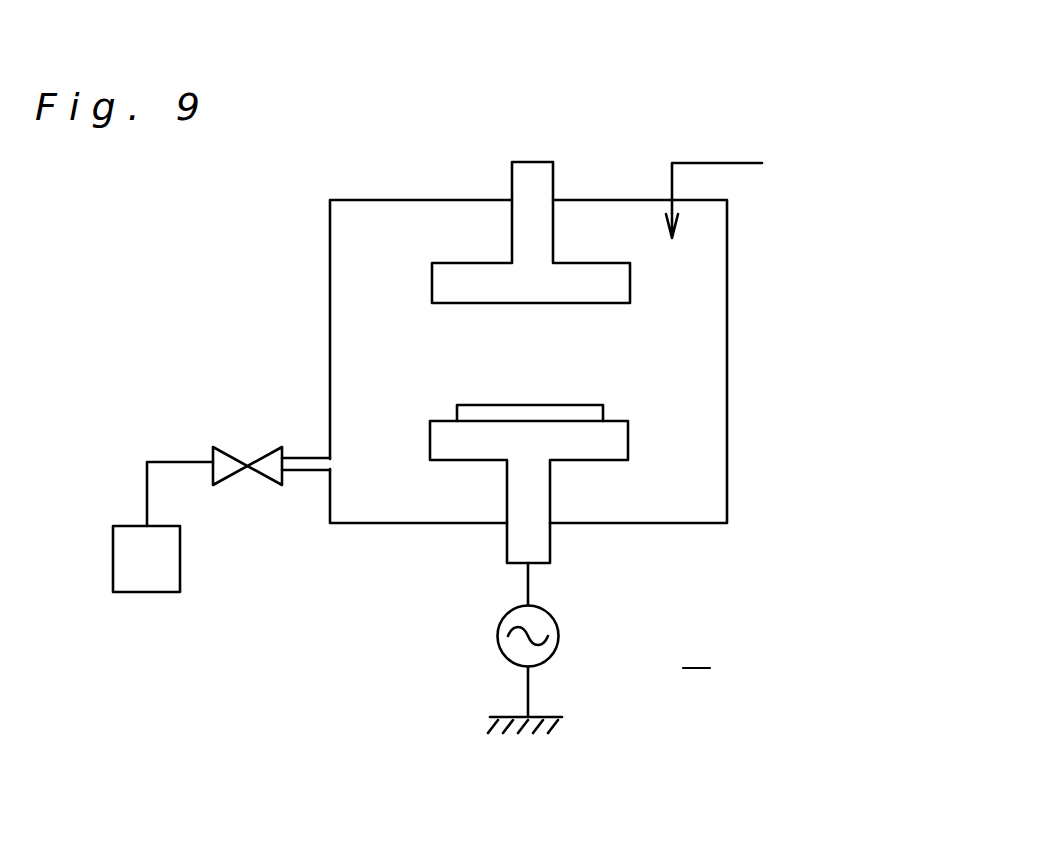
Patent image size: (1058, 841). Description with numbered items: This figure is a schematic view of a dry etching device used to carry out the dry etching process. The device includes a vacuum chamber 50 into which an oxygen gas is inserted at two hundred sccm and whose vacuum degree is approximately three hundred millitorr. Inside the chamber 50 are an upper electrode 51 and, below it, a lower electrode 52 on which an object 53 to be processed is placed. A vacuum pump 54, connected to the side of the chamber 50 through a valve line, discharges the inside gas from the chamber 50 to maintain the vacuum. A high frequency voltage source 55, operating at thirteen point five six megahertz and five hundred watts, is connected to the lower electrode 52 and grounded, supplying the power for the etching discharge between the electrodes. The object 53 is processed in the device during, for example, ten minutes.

The vacuum chamber 50 is at (330, 293).
The upper electrode 51 is at (630, 277).
The lower electrode 52 is at (628, 445).
The object to be processed 53 is at (603, 410).
The vacuum pump 54 is at (180, 558).
The high frequency voltage source 55 is at (497, 631).